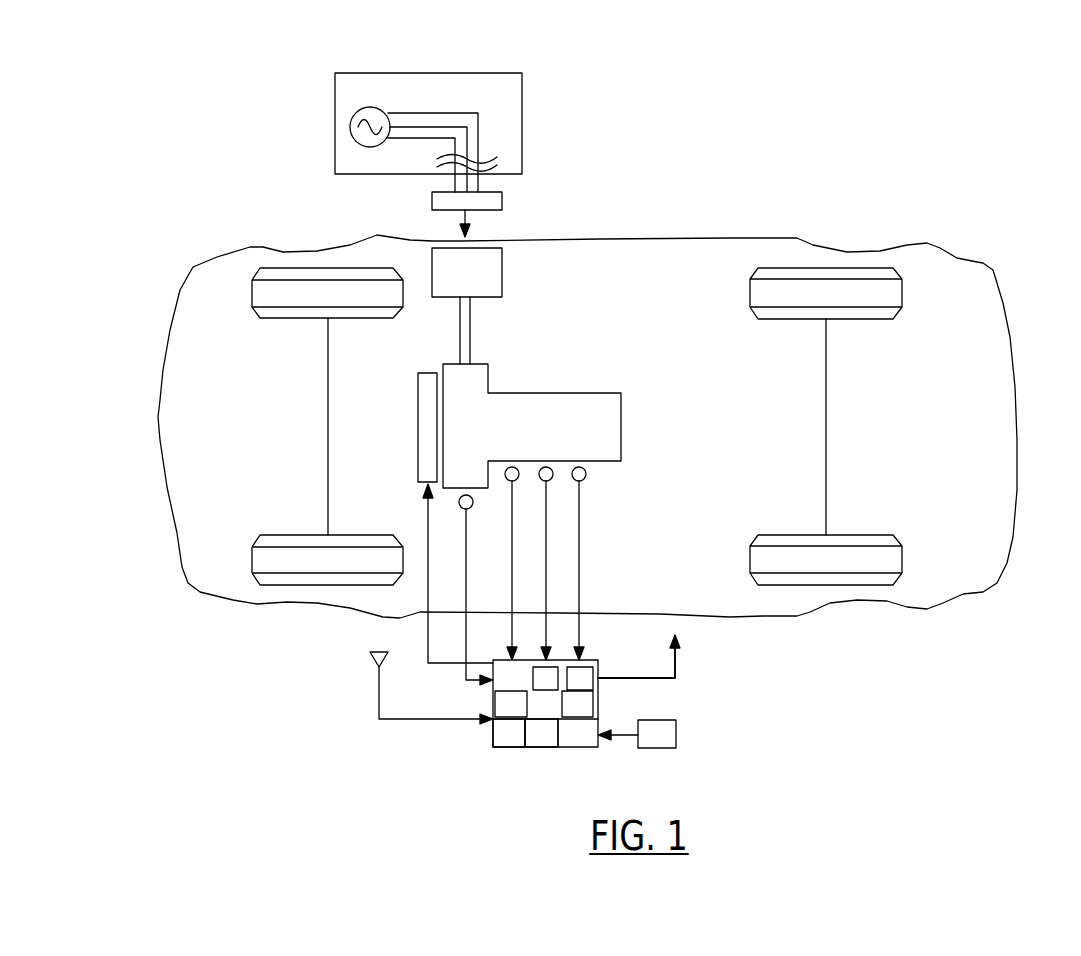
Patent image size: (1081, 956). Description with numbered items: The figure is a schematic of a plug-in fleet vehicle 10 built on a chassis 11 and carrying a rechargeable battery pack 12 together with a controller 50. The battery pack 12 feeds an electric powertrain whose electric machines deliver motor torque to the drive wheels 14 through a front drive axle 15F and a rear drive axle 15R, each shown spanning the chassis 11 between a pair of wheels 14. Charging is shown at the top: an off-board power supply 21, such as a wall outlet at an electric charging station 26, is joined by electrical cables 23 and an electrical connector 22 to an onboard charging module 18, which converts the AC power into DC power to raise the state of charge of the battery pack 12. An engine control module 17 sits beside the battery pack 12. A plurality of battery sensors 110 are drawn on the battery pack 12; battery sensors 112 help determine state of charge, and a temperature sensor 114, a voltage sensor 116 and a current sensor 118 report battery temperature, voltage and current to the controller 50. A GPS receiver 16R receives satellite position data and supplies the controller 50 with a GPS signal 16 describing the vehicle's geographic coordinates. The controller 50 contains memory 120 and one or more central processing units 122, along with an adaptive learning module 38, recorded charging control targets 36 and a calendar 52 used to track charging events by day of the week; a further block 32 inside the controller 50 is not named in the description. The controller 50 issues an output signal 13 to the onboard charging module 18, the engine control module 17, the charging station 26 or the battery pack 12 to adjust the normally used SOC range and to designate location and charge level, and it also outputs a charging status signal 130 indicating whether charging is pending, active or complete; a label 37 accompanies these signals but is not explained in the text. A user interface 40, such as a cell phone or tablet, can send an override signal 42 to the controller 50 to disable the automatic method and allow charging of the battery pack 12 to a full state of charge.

The plug-in fleet vehicle 10 is at (1007, 237).
The chassis 11 is at (165, 432).
The rechargeable battery pack 12 is at (597, 402).
The output signal 13 is at (425, 509).
The drive wheels 14 is at (252, 292).
The rear drive axle 15R is at (327, 427).
The front drive axle 15F is at (827, 427).
The GPS signal 16 is at (425, 722).
The GPS receiver 16R is at (372, 658).
The engine control module 17 is at (425, 383).
The onboard charging module 18 is at (493, 270).
The off-board power supply 21 is at (350, 127).
The electrical connector 22 is at (432, 200).
The electrical cables 23 is at (493, 113).
The charging station 26 is at (494, 73).
The controller module 32 is at (502, 708).
The recorded charging control targets 36 is at (545, 665).
The output signal 37 is at (678, 661).
The adaptive learning module 38 is at (590, 710).
The user interface 40 is at (667, 742).
The override signal 42 is at (620, 738).
The controller 50 is at (598, 670).
The calendar 52 is at (583, 665).
The battery sensors 110 is at (591, 465).
The battery sensors 112 is at (464, 540).
The temperature sensor 114 is at (511, 571).
The voltage sensor 116 is at (548, 560).
The current sensor 118 is at (580, 600).
The memory 120 is at (541, 742).
The central processing units 122 is at (580, 742).
The charging status signal 130 is at (678, 661).